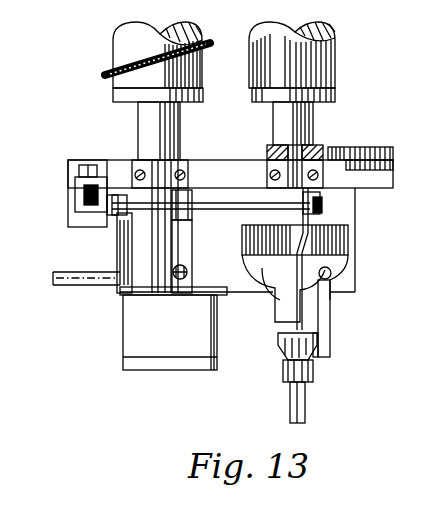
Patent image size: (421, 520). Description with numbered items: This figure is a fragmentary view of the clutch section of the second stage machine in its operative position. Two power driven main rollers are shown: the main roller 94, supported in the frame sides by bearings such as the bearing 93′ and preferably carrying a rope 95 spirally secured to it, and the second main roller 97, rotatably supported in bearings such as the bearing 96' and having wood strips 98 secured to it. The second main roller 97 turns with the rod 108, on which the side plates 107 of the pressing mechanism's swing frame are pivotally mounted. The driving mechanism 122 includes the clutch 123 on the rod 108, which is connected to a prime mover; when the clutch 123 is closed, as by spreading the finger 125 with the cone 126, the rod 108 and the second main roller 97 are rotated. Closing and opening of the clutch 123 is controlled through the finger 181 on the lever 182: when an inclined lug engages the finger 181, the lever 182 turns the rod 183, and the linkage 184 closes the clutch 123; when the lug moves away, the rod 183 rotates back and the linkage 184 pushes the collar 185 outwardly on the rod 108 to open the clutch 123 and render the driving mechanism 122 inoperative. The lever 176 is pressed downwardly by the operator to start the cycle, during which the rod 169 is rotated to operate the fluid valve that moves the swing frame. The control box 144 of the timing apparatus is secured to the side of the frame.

The main roller 94 is at (122, 43).
The rope 95 is at (105, 75).
The bearing 93′ is at (155, 167).
The wood strips 98 is at (327, 52).
The second main roller 97 is at (313, 78).
The bearing 96' is at (272, 161).
The side plate 107 is at (315, 148).
The finger 181 is at (92, 170).
The lever 182 is at (83, 190).
The rod 183 is at (217, 213).
The linkage 184 is at (310, 222).
The rod 169 is at (188, 290).
The lever 176 is at (75, 287).
The control box 144 is at (137, 338).
The driving mechanism 122 is at (273, 300).
The clutch 123 is at (333, 307).
The finger 125 is at (322, 338).
The cone 126 is at (280, 347).
The collar 185 is at (292, 387).
The rod 108 is at (305, 412).